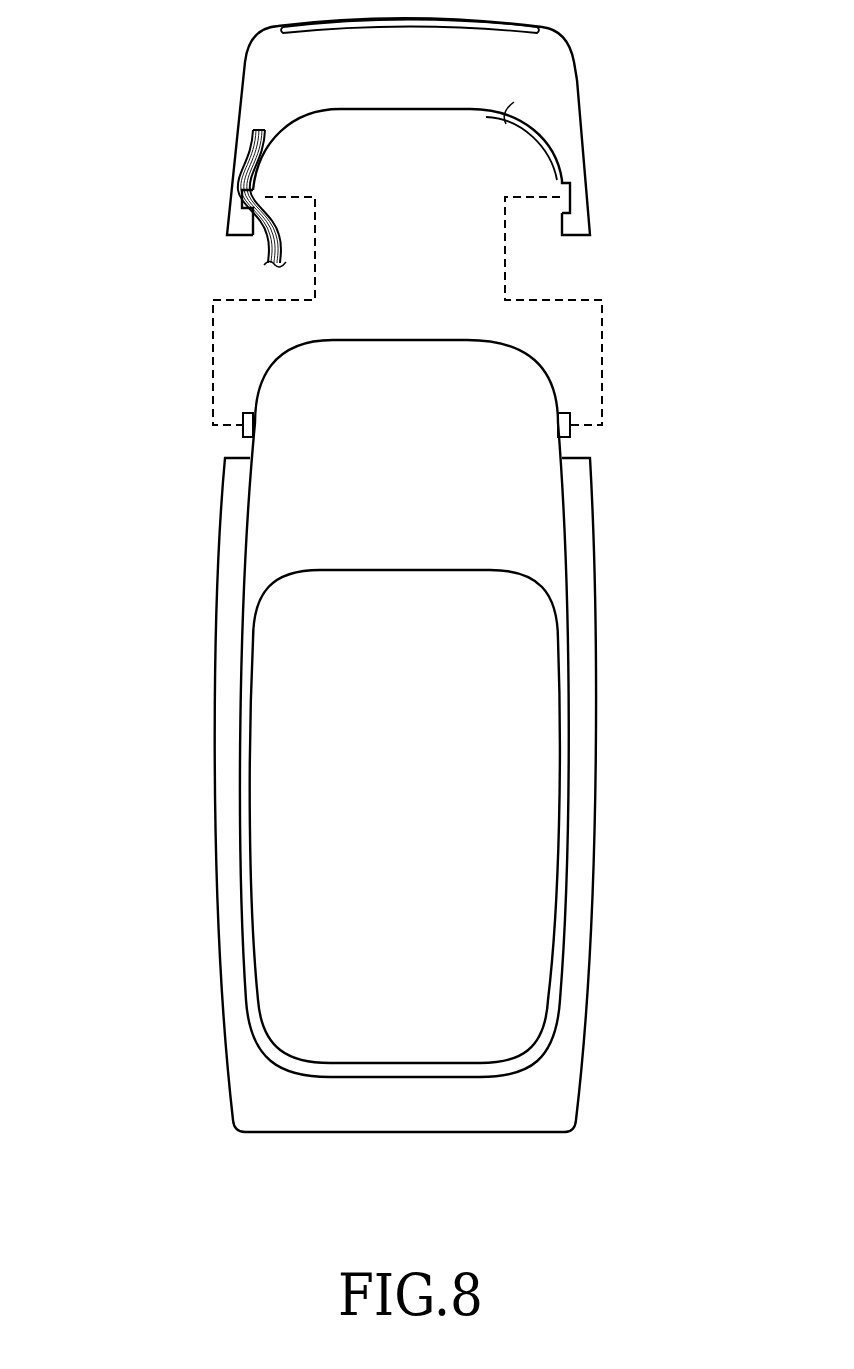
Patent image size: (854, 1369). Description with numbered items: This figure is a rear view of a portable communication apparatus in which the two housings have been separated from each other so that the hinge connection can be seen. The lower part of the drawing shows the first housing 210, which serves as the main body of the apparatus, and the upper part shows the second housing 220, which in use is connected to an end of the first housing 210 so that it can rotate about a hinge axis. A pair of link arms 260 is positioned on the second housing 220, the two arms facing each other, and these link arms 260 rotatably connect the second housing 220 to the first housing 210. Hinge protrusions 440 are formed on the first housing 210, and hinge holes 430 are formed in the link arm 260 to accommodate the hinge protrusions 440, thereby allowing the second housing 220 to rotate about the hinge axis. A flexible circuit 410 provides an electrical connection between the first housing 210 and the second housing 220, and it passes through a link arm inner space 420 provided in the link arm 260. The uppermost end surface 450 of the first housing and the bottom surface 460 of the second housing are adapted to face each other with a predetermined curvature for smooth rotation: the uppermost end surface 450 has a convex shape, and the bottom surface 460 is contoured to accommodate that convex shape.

The first housing 210 is at (610, 647).
The second housing 220 is at (583, 33).
The link arm 260 is at (592, 219).
The flexible circuit 410 is at (247, 157).
The link arm inner space 420 is at (567, 137).
The hinge hole 430 is at (563, 200).
The hinge protrusion 440 is at (243, 425).
The uppermost end surface of the first housing 450 is at (420, 340).
The bottom surface of the second housing 460 is at (430, 110).